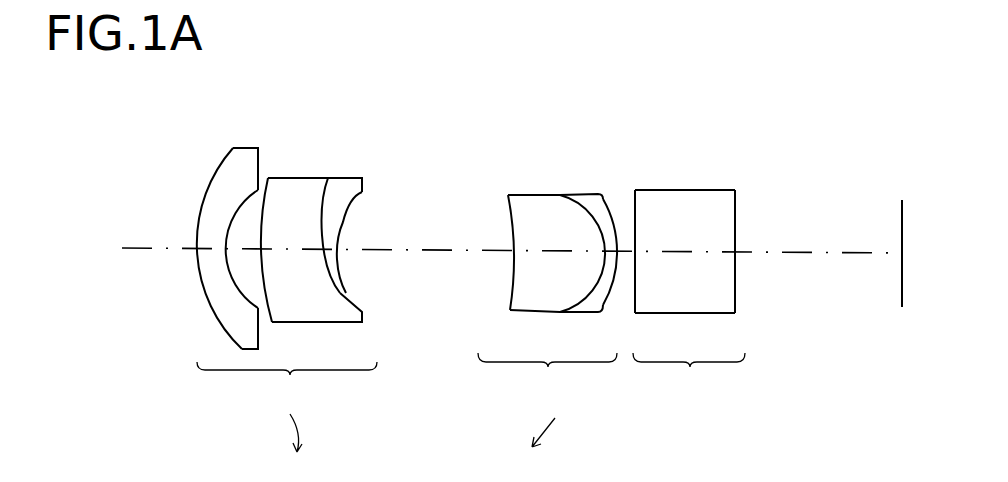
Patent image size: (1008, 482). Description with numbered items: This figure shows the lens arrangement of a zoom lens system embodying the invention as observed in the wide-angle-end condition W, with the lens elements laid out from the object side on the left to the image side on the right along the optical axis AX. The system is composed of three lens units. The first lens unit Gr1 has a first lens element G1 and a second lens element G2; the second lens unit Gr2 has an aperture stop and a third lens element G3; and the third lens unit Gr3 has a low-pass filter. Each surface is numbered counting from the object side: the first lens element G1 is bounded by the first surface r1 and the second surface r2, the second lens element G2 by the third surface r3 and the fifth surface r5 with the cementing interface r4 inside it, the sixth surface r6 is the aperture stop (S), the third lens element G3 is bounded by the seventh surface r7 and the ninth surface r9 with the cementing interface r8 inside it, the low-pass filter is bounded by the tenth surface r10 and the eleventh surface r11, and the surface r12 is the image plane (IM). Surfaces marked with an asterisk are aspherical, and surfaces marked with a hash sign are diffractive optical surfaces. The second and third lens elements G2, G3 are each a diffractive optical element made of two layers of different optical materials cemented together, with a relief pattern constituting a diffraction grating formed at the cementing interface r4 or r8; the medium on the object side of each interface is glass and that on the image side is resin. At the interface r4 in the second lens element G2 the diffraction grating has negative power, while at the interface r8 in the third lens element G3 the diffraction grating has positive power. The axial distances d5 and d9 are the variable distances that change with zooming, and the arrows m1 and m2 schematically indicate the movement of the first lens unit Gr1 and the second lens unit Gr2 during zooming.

The wide-angle-end condition W is at (83, 248).
The optical axis AX is at (820, 253).
The first lens unit Gr1 is at (292, 248).
The second lens unit Gr2 is at (543, 253).
The third lens unit Gr3 is at (690, 267).
The first lens element G1 is at (219, 224).
The second lens element G2 is at (336, 233).
The third lens element G3 is at (543, 227).
The first surface r1 is at (220, 165).
The second surface r2 is at (240, 197).
The third surface r3 is at (267, 180).
The cementing interface of the second lens element r4 is at (333, 200).
The fifth surface r5 is at (343, 222).
The aperture stop r6 is at (512, 287).
The seventh surface r7 is at (513, 233).
The cementing interface of the third lens element r8 is at (575, 200).
The ninth surface r9 is at (615, 200).
The tenth surface r10 is at (635, 205).
The eleventh surface r11 is at (735, 200).
The image plane r12 is at (900, 215).
The variable axial distance d5 is at (424, 235).
The variable axial distance d9 is at (622, 257).
The arrow indicating movement of the first lens unit m1 is at (302, 433).
The arrow indicating movement of the second lens unit m2 is at (548, 430).